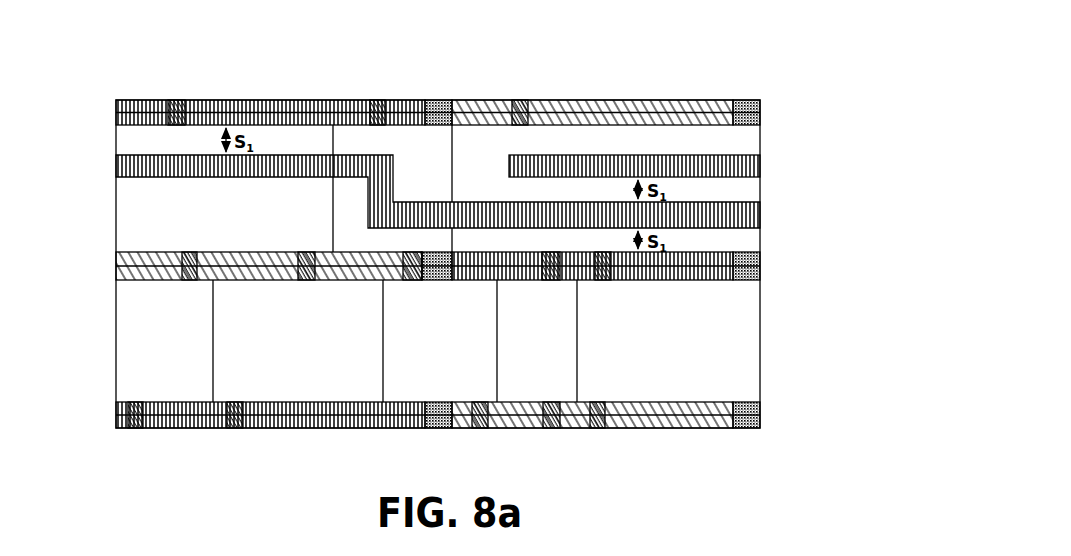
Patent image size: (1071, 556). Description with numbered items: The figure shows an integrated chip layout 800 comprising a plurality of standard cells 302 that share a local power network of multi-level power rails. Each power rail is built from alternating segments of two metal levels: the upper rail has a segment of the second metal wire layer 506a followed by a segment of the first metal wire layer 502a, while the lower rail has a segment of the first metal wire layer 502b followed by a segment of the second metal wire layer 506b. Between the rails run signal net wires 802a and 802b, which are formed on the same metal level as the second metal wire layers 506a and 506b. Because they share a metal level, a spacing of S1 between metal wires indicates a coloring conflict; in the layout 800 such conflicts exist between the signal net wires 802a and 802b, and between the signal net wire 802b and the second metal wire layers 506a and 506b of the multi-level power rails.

The integrated chip layout 800 is at (76, 36).
The second metal wire layer 506a is at (218, 99).
The first metal wire layer 502a is at (629, 99).
The standard cell 302 is at (417, 263).
The signal net wire 802a is at (764, 160).
The signal net wire 802b is at (764, 203).
The first metal wire layer 502b is at (345, 283).
The second metal wire layer 506b is at (657, 284).